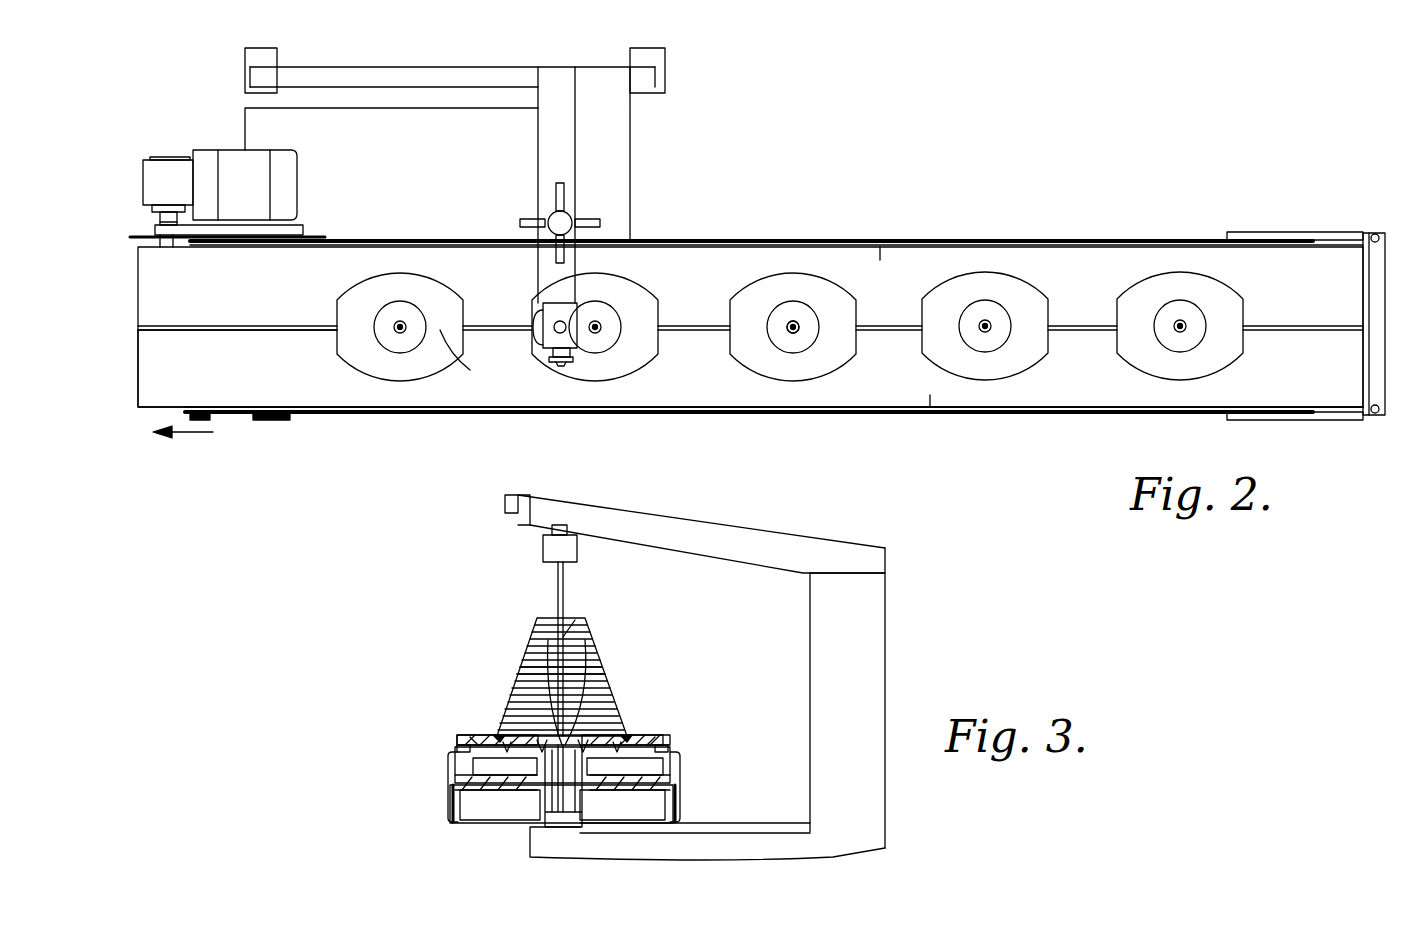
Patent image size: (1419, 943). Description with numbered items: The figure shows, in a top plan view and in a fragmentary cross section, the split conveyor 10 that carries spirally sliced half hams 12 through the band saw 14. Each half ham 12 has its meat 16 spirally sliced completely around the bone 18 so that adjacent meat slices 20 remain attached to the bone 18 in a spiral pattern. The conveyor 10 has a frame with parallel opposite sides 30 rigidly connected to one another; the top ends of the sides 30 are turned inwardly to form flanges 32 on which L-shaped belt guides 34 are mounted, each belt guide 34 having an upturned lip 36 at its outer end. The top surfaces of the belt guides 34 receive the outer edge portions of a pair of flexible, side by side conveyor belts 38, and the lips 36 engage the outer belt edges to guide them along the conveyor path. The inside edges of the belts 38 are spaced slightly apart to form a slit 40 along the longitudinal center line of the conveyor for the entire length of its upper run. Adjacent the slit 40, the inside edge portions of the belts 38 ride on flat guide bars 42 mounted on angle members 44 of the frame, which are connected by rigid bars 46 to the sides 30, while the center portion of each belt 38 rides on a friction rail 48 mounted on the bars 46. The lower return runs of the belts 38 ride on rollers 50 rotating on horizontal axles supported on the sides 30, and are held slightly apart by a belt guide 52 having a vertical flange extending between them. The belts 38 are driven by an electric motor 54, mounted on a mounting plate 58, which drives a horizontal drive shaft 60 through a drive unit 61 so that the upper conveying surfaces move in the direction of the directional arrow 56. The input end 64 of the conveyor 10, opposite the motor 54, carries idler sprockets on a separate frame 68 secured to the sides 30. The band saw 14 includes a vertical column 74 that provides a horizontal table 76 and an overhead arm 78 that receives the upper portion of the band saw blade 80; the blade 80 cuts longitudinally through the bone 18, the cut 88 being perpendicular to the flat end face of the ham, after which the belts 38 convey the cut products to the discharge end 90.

In FIG. 2, the split conveyor 10 is at (1097, 228).
In FIG. 3, the split conveyor 10 is at (353, 681).
In FIG. 2, the half ham 12 is at (378, 298).
In FIG. 3, the half ham 12 is at (538, 616).
In FIG. 2, the band saw 14 is at (645, 136).
In FIG. 3, the meat 16 is at (603, 648).
In FIG. 2, the bone 18 is at (793, 327).
In FIG. 3, the bone 18 is at (563, 637).
In FIG. 3, the meat slices 20 is at (530, 660).
In FIG. 2, the sides 30 is at (990, 240).
In FIG. 3, the sides 30 is at (673, 790).
In FIG. 3, the flanges 32 is at (672, 762).
In FIG. 2, the belt guides 34 is at (743, 245).
In FIG. 3, the belt guides 34 is at (668, 752).
In FIG. 3, the upturned lip 36 is at (666, 745).
In FIG. 2, the conveyor belts 38 is at (880, 247).
In FIG. 3, the conveyor belts 38 is at (658, 737).
In FIG. 2, the slit 40 is at (673, 330).
In FIG. 3, the slit 40 is at (590, 690).
In FIG. 3, the guide bars 42 is at (568, 742).
In FIG. 3, the angle members 44 is at (548, 782).
In FIG. 3, the rigid bars 46 is at (475, 780).
In FIG. 3, the friction rail 48 is at (625, 735).
In FIG. 3, the rollers 50 is at (465, 820).
In FIG. 3, the belt guide 52 is at (558, 818).
In FIG. 2, the electric motor 54 is at (238, 168).
In FIG. 2, the directional arrow 56 is at (185, 434).
In FIG. 2, the mounting plate 58 is at (290, 228).
In FIG. 2, the drive shaft 60 is at (160, 220).
In FIG. 2, the drive unit 61 is at (165, 170).
In FIG. 2, the input end 64 is at (1338, 260).
In FIG. 2, the separate frame 68 is at (1358, 416).
In FIG. 3, the vertical column 74 is at (870, 663).
In FIG. 2, the horizontal table 76 is at (430, 118).
In FIG. 3, the horizontal table 76 is at (787, 825).
In FIG. 2, the overhead arm 78 is at (560, 147).
In FIG. 3, the overhead arm 78 is at (662, 540).
In FIG. 3, the band saw blade 80 is at (566, 582).
In FIG. 2, the cut 88 is at (452, 352).
In FIG. 2, the discharge end 90 is at (155, 357).